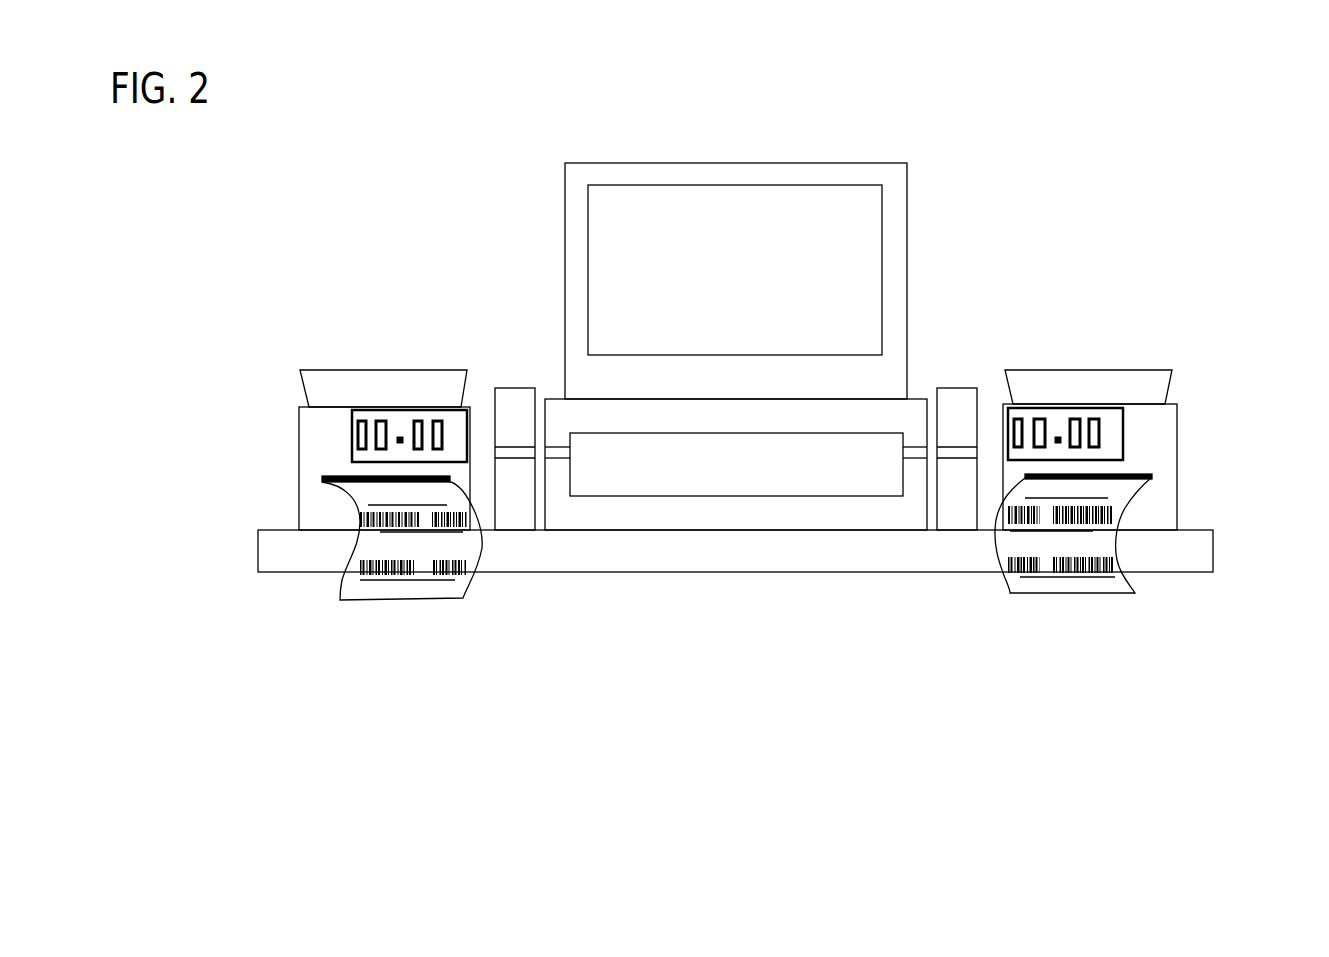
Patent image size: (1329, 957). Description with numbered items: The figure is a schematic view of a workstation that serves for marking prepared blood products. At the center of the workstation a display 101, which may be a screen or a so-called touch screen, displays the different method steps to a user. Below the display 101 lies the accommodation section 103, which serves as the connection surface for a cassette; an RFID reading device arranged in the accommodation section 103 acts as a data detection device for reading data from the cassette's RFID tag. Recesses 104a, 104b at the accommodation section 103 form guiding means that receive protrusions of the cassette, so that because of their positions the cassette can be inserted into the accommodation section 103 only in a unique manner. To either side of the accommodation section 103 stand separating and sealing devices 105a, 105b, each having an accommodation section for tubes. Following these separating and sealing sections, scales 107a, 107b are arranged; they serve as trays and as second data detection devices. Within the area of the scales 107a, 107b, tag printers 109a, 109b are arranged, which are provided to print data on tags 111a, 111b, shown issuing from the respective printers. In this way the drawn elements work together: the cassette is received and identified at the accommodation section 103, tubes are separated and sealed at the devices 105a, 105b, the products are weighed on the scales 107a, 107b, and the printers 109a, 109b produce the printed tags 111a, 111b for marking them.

The display 101 is at (833, 267).
The accommodation section 103 is at (748, 460).
The recess 104a is at (561, 452).
The recess 104b is at (921, 452).
The separating and sealing device 105a is at (518, 415).
The separating and sealing device 105b is at (952, 412).
The scale 107a is at (352, 440).
The scale 107b is at (1090, 403).
The tag printer 109a is at (317, 500).
The tag printer 109b is at (1160, 492).
The tag 111a is at (370, 593).
The tag 111b is at (1133, 585).